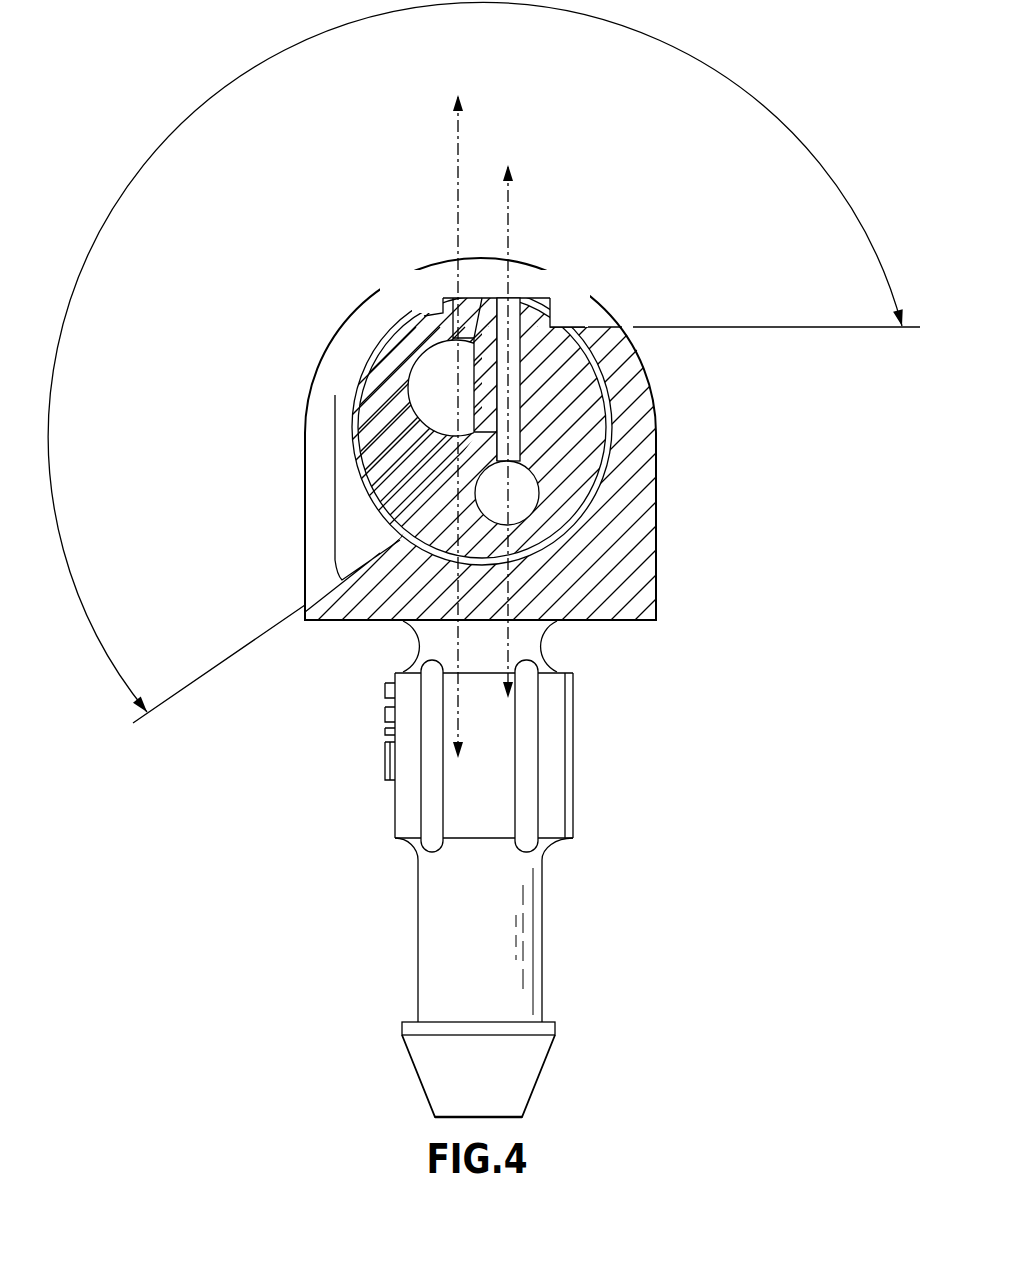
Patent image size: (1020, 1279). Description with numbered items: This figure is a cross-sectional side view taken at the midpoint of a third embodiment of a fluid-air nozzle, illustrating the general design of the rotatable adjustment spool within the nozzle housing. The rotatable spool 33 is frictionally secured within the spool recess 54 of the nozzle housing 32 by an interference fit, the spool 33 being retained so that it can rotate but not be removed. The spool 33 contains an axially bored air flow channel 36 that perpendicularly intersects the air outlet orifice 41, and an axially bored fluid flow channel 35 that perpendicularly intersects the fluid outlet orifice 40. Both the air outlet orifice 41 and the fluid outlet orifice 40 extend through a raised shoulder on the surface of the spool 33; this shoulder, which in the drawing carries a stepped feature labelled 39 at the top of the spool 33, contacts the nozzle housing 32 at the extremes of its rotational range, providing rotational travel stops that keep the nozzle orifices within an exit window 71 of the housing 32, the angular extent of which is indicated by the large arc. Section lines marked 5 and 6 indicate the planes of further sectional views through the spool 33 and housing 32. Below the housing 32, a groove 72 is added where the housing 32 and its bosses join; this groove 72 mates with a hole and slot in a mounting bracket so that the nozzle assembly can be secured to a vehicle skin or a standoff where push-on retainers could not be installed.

The exit window 71 is at (265, 60).
The section line 6 is at (457, 428).
The section line 5 is at (507, 432).
The fluid outlet orifice 40 is at (477, 297).
The air outlet orifice 41 is at (511, 297).
The tab 39 is at (550, 300).
The fluid flow channel 35 is at (423, 385).
The rotatable spool 33 is at (568, 423).
The air flow channel 36 is at (523, 495).
The spool recess 54 is at (367, 497).
The nozzle housing 32 is at (657, 567).
The groove 72 is at (540, 647).